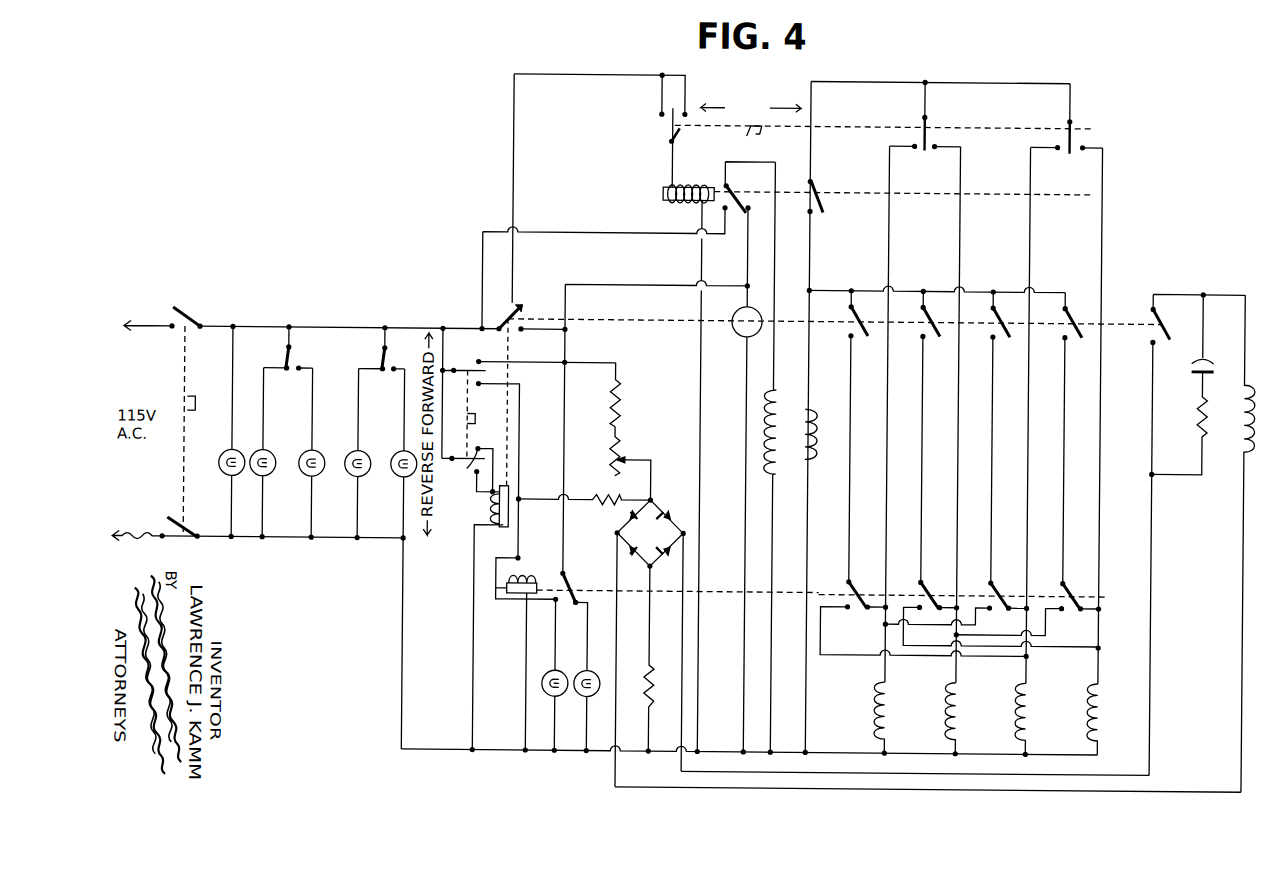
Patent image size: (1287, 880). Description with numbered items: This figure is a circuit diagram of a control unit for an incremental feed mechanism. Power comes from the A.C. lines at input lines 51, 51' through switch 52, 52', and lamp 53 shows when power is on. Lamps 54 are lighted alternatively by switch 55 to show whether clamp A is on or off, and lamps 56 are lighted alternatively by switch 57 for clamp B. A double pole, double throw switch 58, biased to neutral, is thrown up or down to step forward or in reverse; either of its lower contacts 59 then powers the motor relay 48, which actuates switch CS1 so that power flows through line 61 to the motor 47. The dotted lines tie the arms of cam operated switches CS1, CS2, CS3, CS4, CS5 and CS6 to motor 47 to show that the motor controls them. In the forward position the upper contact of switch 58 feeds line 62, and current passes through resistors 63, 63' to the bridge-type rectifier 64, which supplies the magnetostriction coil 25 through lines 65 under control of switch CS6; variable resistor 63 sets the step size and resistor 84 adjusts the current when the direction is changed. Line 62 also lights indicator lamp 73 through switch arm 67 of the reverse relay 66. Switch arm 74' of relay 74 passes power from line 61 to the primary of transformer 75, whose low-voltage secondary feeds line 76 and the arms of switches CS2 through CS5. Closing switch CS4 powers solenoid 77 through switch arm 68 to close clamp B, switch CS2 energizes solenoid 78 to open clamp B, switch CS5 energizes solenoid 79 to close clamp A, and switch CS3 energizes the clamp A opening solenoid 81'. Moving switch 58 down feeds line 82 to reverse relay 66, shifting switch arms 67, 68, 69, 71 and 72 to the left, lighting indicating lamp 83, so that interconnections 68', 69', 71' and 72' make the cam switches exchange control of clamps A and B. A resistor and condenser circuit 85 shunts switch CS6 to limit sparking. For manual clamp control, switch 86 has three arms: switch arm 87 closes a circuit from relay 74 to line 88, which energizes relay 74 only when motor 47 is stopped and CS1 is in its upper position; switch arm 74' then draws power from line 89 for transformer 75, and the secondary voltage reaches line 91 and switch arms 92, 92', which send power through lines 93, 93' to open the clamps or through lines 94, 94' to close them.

The magnetostriction coil 25 is at (1247, 400).
The motor 47 is at (741, 338).
The motor relay 48 is at (498, 517).
The input line 51 is at (149, 310).
The input line 51' is at (138, 516).
The switch 52 is at (191, 307).
The switch 52' is at (193, 517).
The lamp 53 is at (221, 456).
The lamps 54 is at (306, 455).
The switch 55 is at (291, 358).
The lamps 56 is at (396, 455).
The switch 57 is at (386, 358).
The double pole, double throw switch 58 is at (447, 468).
The lower contacts 59 is at (475, 482).
The line 61 is at (527, 342).
The line 62 is at (529, 370).
The variable resistor 63 is at (635, 463).
The resistor 63' is at (638, 395).
The bridge-type rectifier 64 is at (658, 506).
The lines 65 is at (682, 772).
The reverse relay 66 is at (540, 588).
The switch arm 67 is at (566, 580).
The switch arm 68 is at (867, 584).
The interconnection 68' is at (924, 633).
The switch arm 69 is at (938, 584).
The interconnection 69' is at (1002, 628).
The switch arm 71 is at (1008, 585).
The interconnection 71' is at (946, 622).
The switch arm 72 is at (1080, 586).
The interconnection 72' is at (1020, 627).
The indicator lamp 73 is at (590, 673).
The relay 74 is at (673, 188).
The switch arm 74' is at (749, 234).
The transformer 75 is at (787, 400).
The line 76 is at (834, 289).
The solenoid 77 is at (882, 680).
The solenoid 78 is at (955, 680).
The solenoid 79 is at (1022, 680).
The clamp A open solenoid 81' is at (1064, 707).
The line 82 is at (519, 459).
The indicating lamp 83 is at (553, 674).
The resistor 84 is at (604, 488).
The resistor and condenser circuit 85 is at (1180, 394).
The switch 86 is at (797, 151).
The switch arm 87 is at (678, 135).
The line 88 is at (511, 159).
The line 89 is at (582, 233).
The line 91 is at (856, 82).
The switch arm 92 is at (928, 116).
The switch arm 92' is at (1067, 118).
The line 93 is at (977, 415).
The line 93' is at (1121, 416).
The line 94 is at (908, 414).
The line 94' is at (1051, 415).
The cam operated switch CS1 is at (530, 307).
The cam operated switch CS2 is at (939, 436).
The cam operated switch CS3 is at (1081, 438).
The cam operated switch CS4 is at (869, 435).
The cam operated switch CS5 is at (1009, 436).
The cam operated switch CS6 is at (1195, 534).